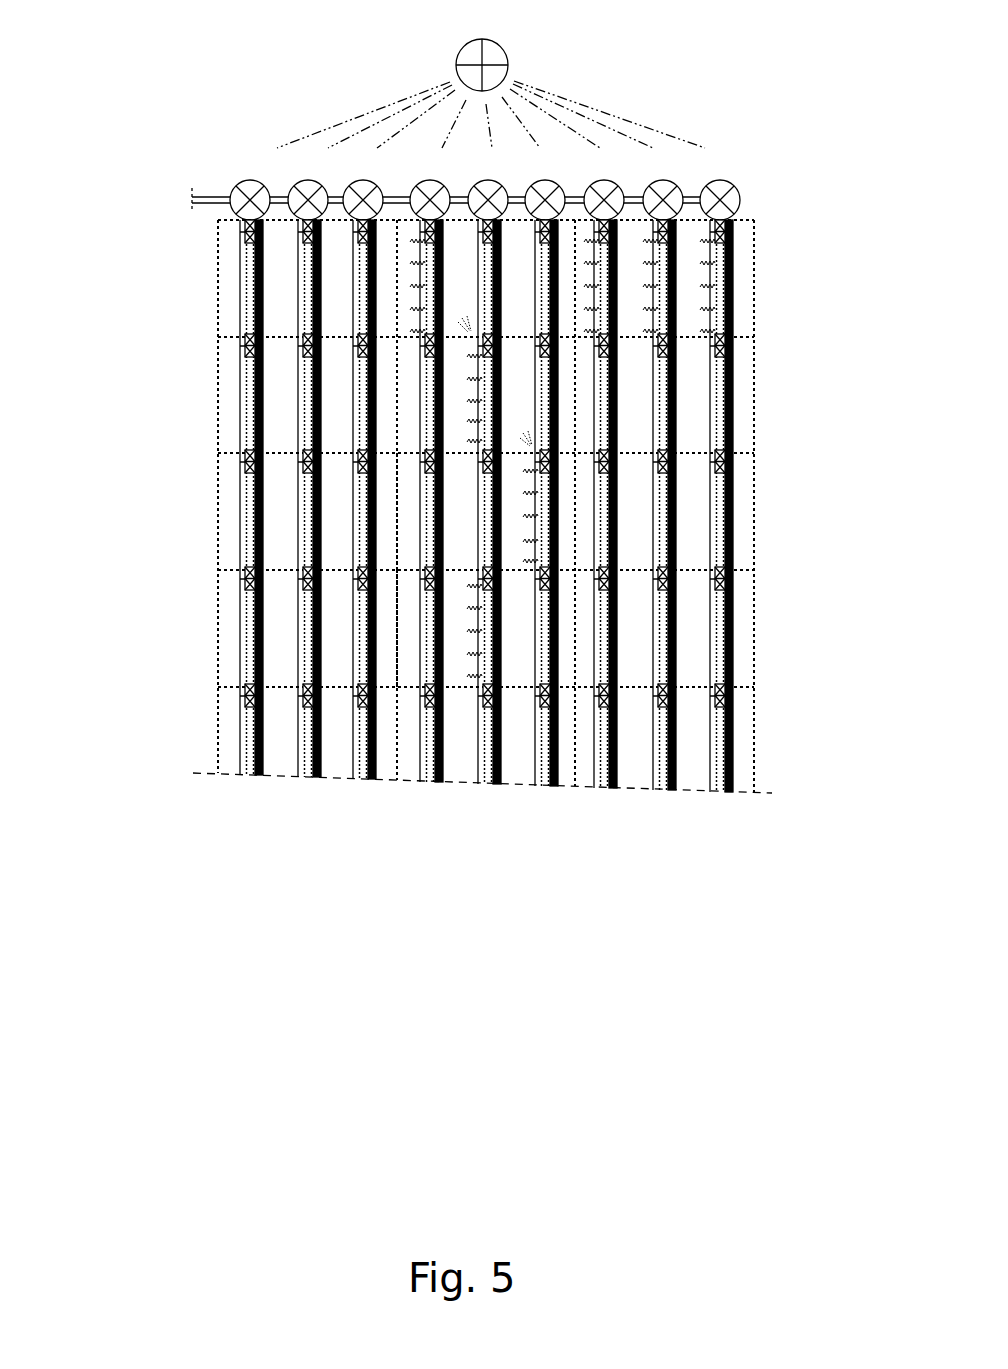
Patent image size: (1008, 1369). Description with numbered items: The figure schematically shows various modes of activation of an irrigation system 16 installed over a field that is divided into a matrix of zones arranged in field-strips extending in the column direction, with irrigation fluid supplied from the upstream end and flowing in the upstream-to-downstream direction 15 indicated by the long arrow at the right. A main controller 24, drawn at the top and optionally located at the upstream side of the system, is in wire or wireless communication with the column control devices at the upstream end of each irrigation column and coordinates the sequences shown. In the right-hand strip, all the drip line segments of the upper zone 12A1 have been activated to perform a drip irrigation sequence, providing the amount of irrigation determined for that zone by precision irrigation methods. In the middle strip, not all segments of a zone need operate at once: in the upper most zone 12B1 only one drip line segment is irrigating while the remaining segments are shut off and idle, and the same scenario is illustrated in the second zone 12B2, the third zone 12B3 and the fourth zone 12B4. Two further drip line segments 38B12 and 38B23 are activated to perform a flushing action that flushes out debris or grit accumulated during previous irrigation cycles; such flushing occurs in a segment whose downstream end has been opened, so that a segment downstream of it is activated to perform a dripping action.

The main controller 24 is at (453, 53).
The irrigation system 16 is at (784, 109).
The upstream-to-downstream direction 15 is at (843, 738).
The upper zone of right-hand field-strip 12A1 is at (750, 275).
The upper most zone 12B1 is at (408, 291).
The second zone 12B2 is at (404, 411).
The third zone 12B3 is at (410, 533).
The fourth zone 12B4 is at (410, 652).
The drip line segment 38B12 is at (458, 278).
The drip line segment 38B23 is at (515, 411).